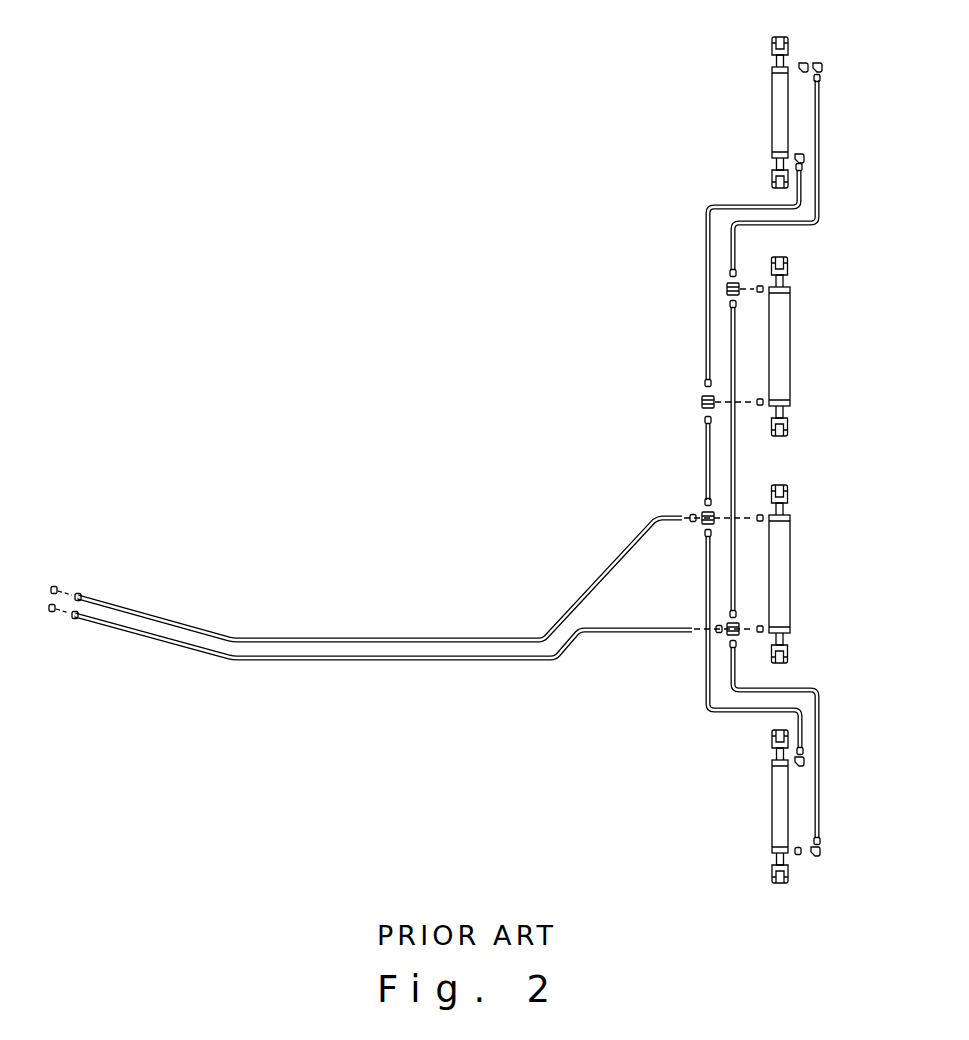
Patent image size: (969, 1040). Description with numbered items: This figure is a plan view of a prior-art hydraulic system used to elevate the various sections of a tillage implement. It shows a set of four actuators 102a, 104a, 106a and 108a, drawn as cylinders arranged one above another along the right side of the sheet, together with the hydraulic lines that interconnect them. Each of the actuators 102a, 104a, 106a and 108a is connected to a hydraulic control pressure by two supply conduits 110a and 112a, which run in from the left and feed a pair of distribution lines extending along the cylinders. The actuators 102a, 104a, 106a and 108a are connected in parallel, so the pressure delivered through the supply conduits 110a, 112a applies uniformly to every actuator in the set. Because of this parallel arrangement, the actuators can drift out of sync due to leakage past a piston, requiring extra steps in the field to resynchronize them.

The actuator 102a is at (773, 117).
The actuator 104a is at (787, 322).
The actuator 106a is at (790, 562).
The actuator 108a is at (773, 822).
The supply conduit 110a is at (117, 602).
The supply conduit 112a is at (152, 635).